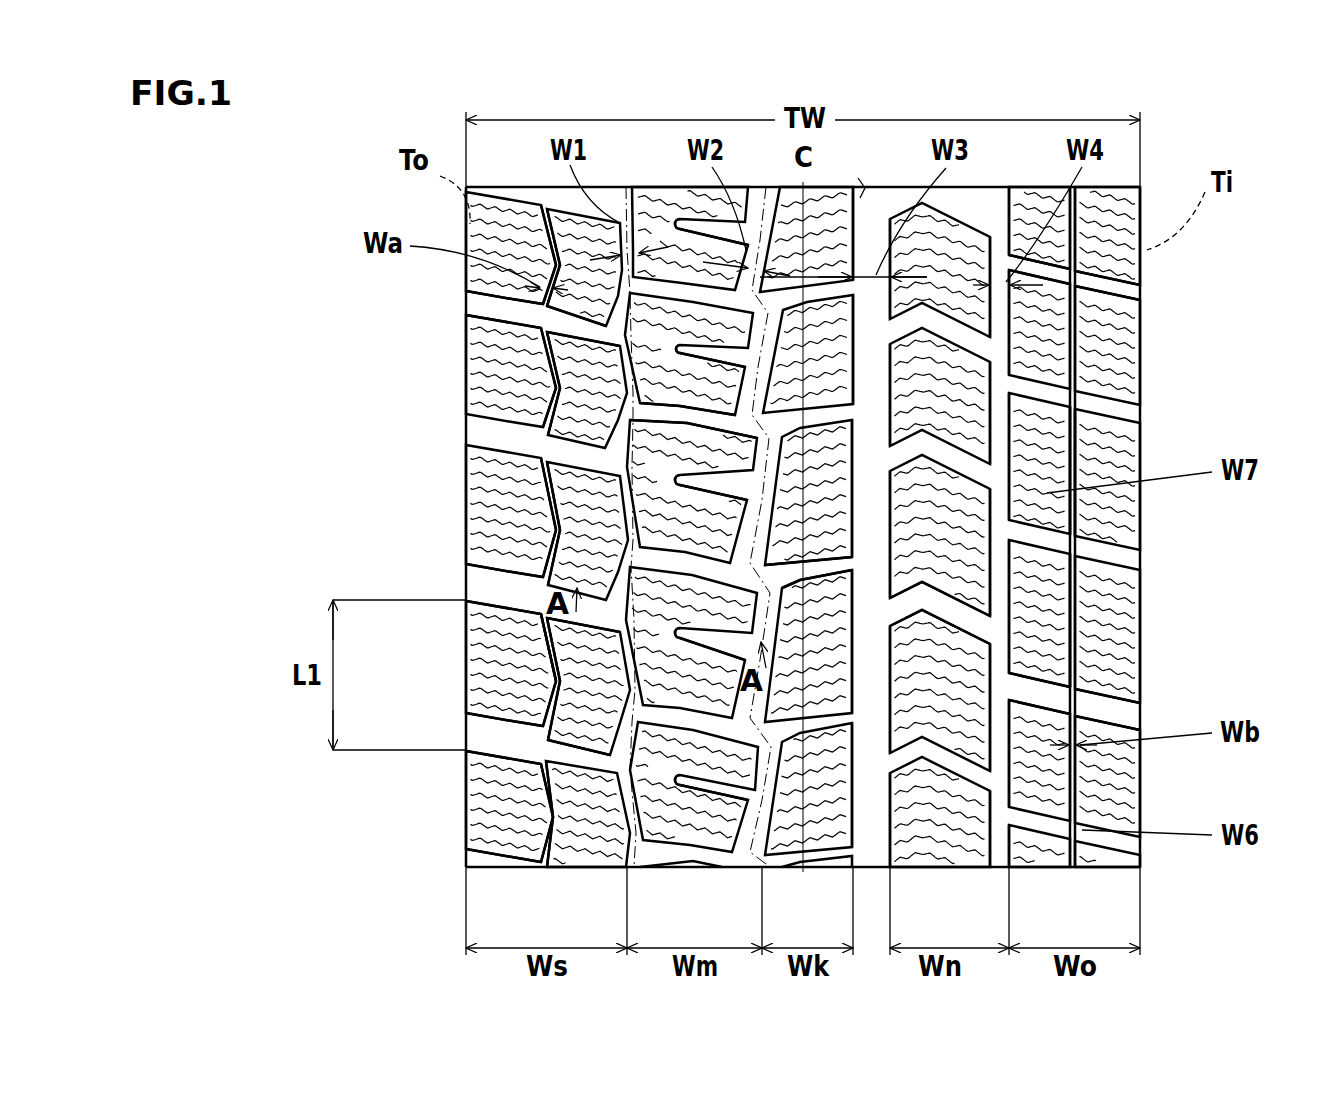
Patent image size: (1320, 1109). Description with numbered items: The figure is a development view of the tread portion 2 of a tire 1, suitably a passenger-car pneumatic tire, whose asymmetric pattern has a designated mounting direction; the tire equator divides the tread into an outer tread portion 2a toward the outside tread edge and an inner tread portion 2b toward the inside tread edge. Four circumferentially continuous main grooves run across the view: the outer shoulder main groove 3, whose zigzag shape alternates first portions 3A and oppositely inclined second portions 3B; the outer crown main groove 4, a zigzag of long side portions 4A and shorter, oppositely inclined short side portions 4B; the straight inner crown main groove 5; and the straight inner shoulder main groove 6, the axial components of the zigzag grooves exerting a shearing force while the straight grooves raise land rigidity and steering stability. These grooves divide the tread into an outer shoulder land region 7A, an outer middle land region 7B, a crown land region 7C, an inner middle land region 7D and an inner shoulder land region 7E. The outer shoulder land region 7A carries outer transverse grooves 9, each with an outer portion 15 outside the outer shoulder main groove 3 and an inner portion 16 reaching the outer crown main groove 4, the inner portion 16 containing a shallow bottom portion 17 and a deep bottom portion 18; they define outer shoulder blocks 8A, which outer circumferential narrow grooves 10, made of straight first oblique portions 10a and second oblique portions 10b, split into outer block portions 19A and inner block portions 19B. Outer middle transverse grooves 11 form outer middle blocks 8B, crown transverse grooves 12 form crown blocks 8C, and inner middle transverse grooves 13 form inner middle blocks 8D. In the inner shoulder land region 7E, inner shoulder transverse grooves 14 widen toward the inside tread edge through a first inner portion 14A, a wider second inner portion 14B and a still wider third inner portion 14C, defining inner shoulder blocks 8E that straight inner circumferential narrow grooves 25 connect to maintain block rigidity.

The tire 1 is at (1170, 135).
The tread portion 2 is at (1157, 185).
The outer tread portion 2a is at (497, 146).
The inner tread portion 2b is at (1030, 188).
The outer shoulder main groove 3 is at (619, 212).
The outer crown main groove 4 is at (758, 228).
The long side portions 4A is at (772, 412).
The short side portions 4B is at (700, 468).
The inner crown main groove 5 is at (878, 237).
The inner shoulder main groove 6 is at (998, 244).
The outer shoulder land region 7A is at (548, 564).
The outer middle land region 7B is at (691, 562).
The crown land region 7C is at (808, 562).
The inner middle land region 7D is at (940, 570).
The inner shoulder land region 7E is at (1074, 562).
The outer shoulder blocks 8A is at (505, 840).
The outer middle blocks 8B is at (685, 832).
The crown blocks 8C is at (813, 824).
The inner middle blocks 8D is at (937, 835).
The inner shoulder blocks 8E is at (1043, 860).
The outer transverse grooves 9 is at (370, 287).
The outer circumferential narrow grooves 10 is at (370, 782).
The first oblique portions 10a is at (500, 836).
The second oblique portions 10b is at (530, 778).
The outer middle transverse grooves 11 is at (687, 420).
The crown transverse grooves 12 is at (832, 568).
The inner middle transverse grooves 13 is at (964, 470).
The inner shoulder transverse grooves 14 is at (1100, 566).
The first inner portion 14A is at (1042, 503).
The second inner portion 14B is at (1100, 528).
The third inner portion 14C is at (1022, 578).
The outer portions 15 is at (512, 313).
The inner portions 16 is at (648, 345).
The shallow bottom portion 17 is at (645, 612).
The deep bottom portion 18 is at (657, 628).
The outer block portions 19A is at (537, 622).
The inner block portions 19B is at (533, 713).
The first portions 3A is at (600, 742).
The second portions 3B is at (530, 652).
The inner circumferential narrow grooves 25 is at (702, 372).